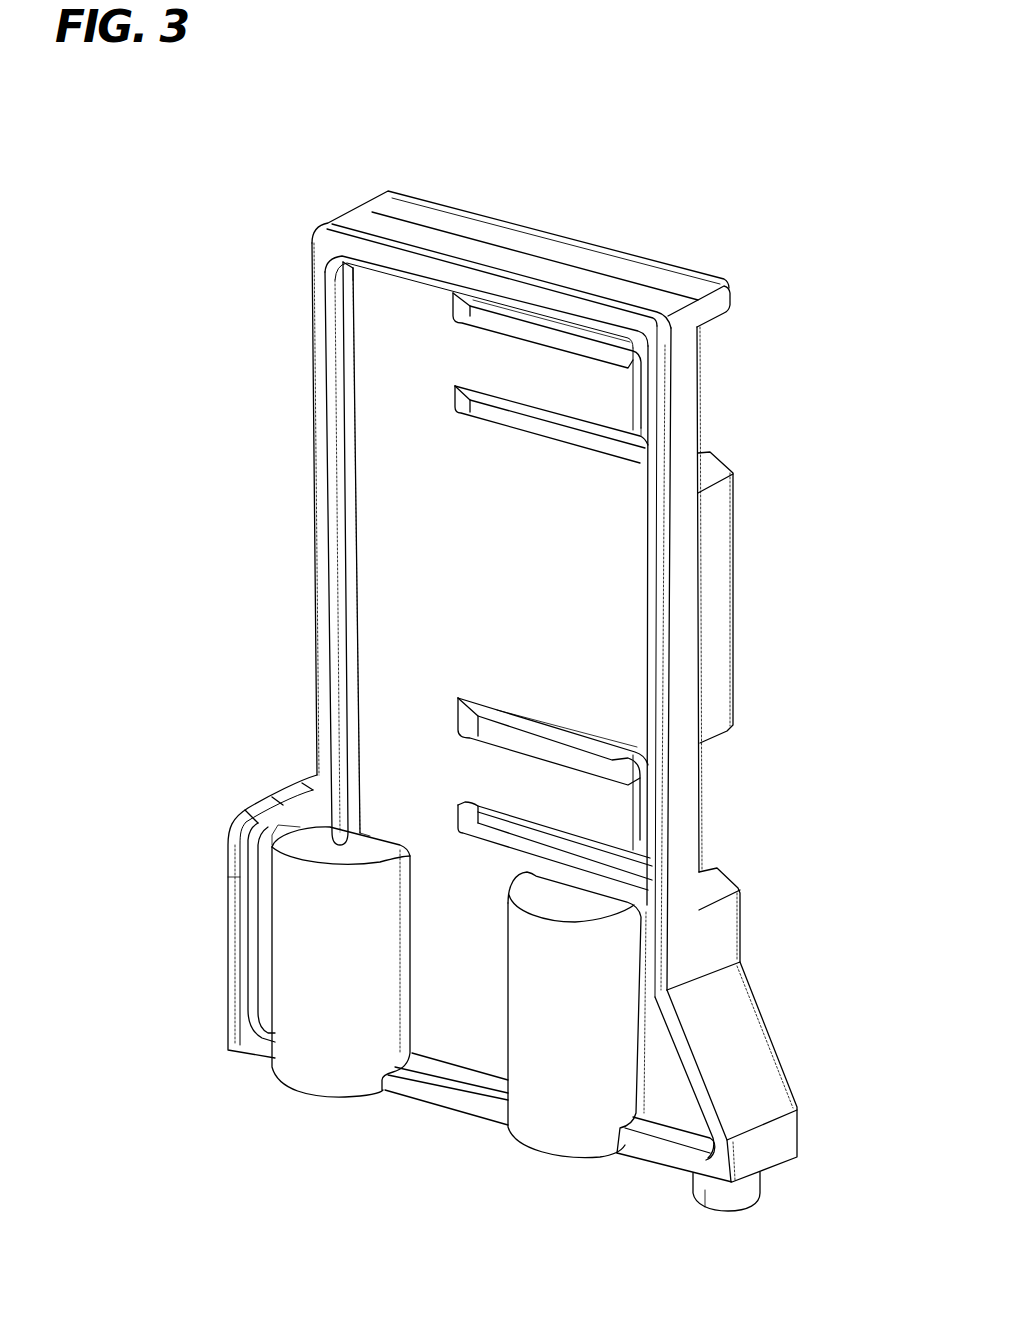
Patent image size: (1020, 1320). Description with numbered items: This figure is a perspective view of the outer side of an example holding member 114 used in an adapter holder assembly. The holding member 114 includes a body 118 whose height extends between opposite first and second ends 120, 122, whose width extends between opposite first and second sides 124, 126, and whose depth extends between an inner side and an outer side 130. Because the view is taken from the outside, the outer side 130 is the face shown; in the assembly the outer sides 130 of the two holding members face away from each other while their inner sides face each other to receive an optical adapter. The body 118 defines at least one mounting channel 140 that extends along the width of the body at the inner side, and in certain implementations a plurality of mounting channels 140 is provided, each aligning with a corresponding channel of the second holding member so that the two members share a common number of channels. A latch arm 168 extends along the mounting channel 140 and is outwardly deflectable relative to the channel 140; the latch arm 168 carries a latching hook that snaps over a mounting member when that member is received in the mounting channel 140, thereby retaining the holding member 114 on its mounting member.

The holding member 114 is at (288, 378).
The body 118 is at (385, 625).
The first end 120 is at (462, 1120).
The second end 122 is at (497, 235).
The first side 124 is at (693, 826).
The second side 126 is at (313, 525).
The outer side 130 is at (500, 599).
The mounting channel 140 is at (713, 322).
The latch arm 168 is at (586, 397).